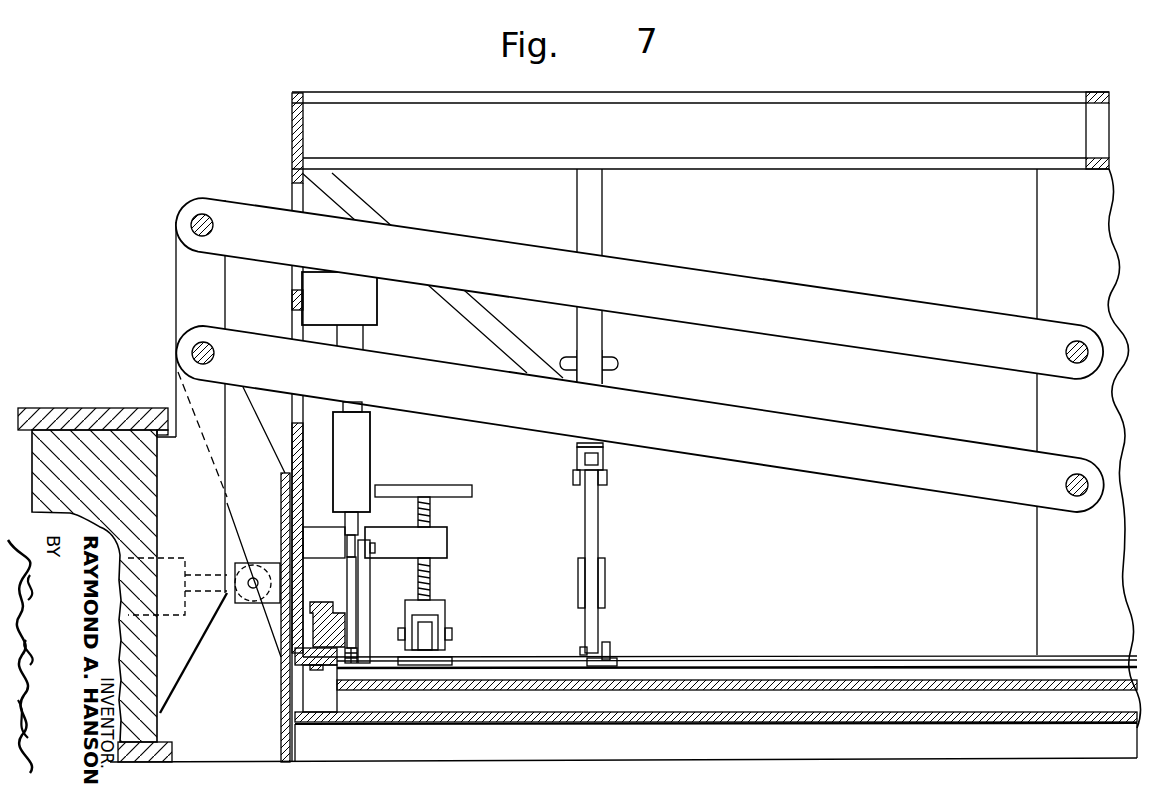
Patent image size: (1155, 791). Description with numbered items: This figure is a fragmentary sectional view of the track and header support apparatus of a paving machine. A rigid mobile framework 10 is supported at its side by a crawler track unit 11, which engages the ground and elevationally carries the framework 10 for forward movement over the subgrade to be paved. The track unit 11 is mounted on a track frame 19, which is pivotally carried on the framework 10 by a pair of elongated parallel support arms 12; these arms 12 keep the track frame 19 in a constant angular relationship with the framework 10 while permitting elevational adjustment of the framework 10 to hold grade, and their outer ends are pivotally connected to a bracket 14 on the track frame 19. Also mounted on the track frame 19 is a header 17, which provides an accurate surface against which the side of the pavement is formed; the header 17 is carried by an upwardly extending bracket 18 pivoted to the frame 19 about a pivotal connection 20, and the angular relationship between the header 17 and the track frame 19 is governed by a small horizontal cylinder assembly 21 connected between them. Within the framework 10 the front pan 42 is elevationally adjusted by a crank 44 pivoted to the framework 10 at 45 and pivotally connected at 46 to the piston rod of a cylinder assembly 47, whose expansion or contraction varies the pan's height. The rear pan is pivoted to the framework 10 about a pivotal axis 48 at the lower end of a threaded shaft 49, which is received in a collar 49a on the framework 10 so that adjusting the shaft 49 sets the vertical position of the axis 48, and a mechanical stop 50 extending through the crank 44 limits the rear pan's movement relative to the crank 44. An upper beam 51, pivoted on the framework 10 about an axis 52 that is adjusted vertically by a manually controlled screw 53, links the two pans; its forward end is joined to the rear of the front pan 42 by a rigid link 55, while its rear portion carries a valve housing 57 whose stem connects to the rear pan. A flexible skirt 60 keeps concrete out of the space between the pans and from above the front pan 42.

The rigid mobile framework 10 is at (292, 133).
The crawler track unit 11 is at (60, 389).
The elongated support arm 12 is at (344, 252).
The bracket 14 is at (185, 300).
The header 17 is at (281, 714).
The upwardly extending bracket 18 is at (256, 429).
The track frame 19 is at (148, 502).
The pivotal connection 20 is at (215, 355).
The horizontal cylinder assembly 21 is at (160, 607).
The front pan 42 is at (522, 711).
The crank 44 is at (348, 585).
The crank pivot 45 is at (343, 640).
The pivotal connection to piston rod 46 is at (375, 548).
The cylinder assembly 47 is at (360, 434).
The pivotal axis 48 is at (452, 633).
The threaded shaft 49 is at (430, 513).
The collar 49a is at (447, 546).
The mechanical stop 50 is at (358, 654).
The upper beam 51 is at (577, 455).
The pivotal axis of beam 52 is at (573, 481).
The manually controlled screw 53 is at (590, 440).
The rigid link 55 is at (598, 528).
The valve housing 57 is at (580, 577).
The flexible skirt 60 is at (612, 726).